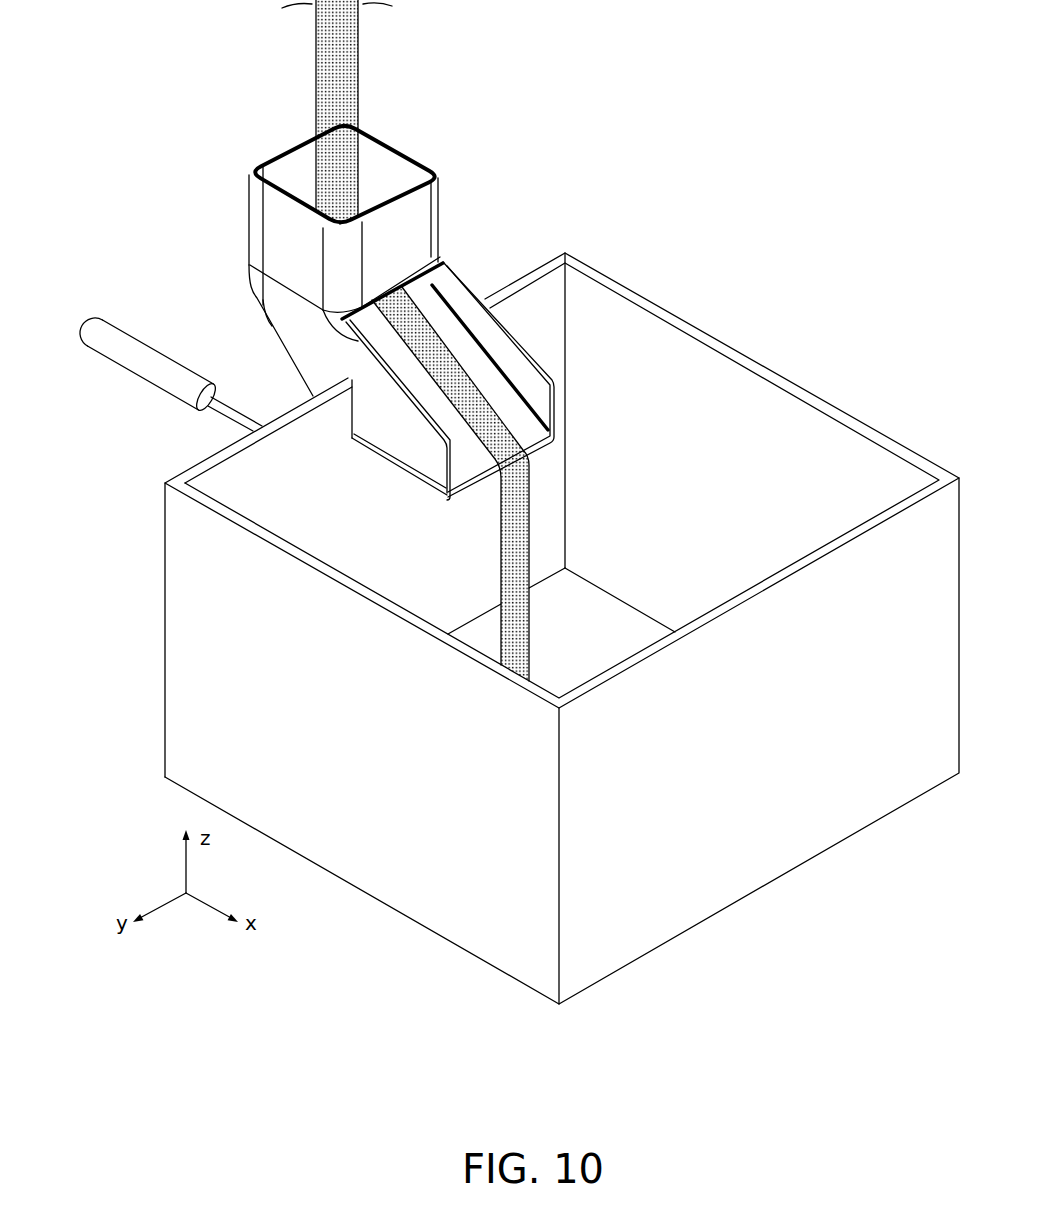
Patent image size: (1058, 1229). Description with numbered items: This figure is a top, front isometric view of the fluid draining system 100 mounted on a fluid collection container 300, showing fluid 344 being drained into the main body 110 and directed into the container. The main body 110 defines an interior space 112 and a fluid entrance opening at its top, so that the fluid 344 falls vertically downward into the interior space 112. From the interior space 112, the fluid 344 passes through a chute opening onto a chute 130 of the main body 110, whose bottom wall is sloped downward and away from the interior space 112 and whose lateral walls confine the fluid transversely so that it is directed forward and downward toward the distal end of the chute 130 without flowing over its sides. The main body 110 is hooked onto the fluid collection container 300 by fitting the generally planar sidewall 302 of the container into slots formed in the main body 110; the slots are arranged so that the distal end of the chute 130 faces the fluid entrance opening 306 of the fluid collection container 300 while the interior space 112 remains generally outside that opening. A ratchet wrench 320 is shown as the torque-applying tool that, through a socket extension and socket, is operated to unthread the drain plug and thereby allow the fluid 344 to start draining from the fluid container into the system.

The fluid draining system 100 is at (348, 298).
The main body 110 is at (291, 246).
The interior space 112 is at (320, 159).
The chute 130 is at (448, 358).
The fluid collection container 300 is at (542, 628).
The sidewall 302 is at (217, 482).
The fluid entrance opening 306 is at (668, 443).
The ratchet wrench 320 is at (151, 374).
The fluid 344 is at (359, 56).